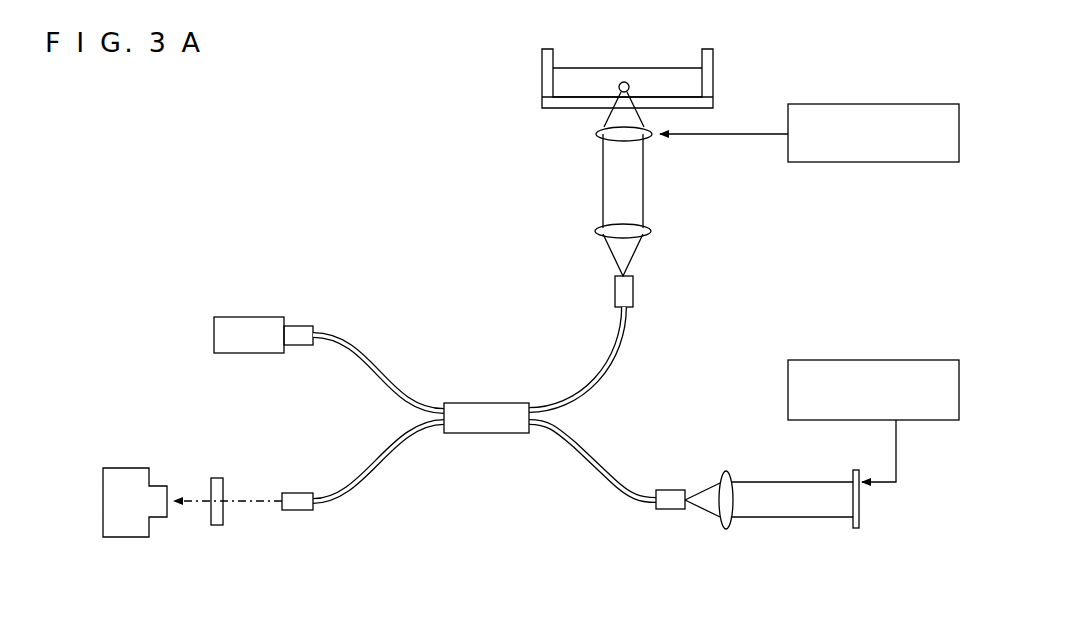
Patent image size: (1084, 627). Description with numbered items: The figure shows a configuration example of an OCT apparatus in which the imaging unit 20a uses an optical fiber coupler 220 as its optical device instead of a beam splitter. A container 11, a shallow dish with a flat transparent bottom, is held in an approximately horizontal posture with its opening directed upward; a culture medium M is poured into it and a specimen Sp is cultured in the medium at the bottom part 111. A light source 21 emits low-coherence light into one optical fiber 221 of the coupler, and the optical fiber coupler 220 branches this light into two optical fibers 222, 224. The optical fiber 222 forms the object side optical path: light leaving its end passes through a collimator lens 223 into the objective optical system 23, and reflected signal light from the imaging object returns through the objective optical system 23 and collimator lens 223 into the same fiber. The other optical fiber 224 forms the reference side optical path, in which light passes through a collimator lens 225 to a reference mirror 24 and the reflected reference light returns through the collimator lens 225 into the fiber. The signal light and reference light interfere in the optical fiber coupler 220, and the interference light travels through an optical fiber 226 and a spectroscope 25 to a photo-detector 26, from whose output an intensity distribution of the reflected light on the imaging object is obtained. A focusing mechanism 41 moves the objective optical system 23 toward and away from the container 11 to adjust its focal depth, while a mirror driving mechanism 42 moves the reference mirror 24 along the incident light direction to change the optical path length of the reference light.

The container 11 is at (713, 72).
The culture medium M is at (582, 70).
The bottom part 111 is at (560, 102).
The specimen Sp is at (629, 82).
The objective optical system 23 is at (603, 135).
The collimator lens 223 is at (649, 233).
The focusing mechanism 41 is at (853, 104).
The mirror driving mechanism 42 is at (855, 360).
The light source 21 is at (249, 317).
The optical fiber 221 is at (362, 347).
The optical fiber 226 is at (390, 460).
The optical fiber 222 is at (619, 350).
The optical fiber 224 is at (603, 468).
The optical fiber coupler 220 is at (490, 403).
The collimator lens 225 is at (724, 470).
The reference mirror 24 is at (856, 530).
The spectroscope 25 is at (216, 478).
The photo-detector 26 is at (136, 537).
The imaging unit 20a is at (442, 218).